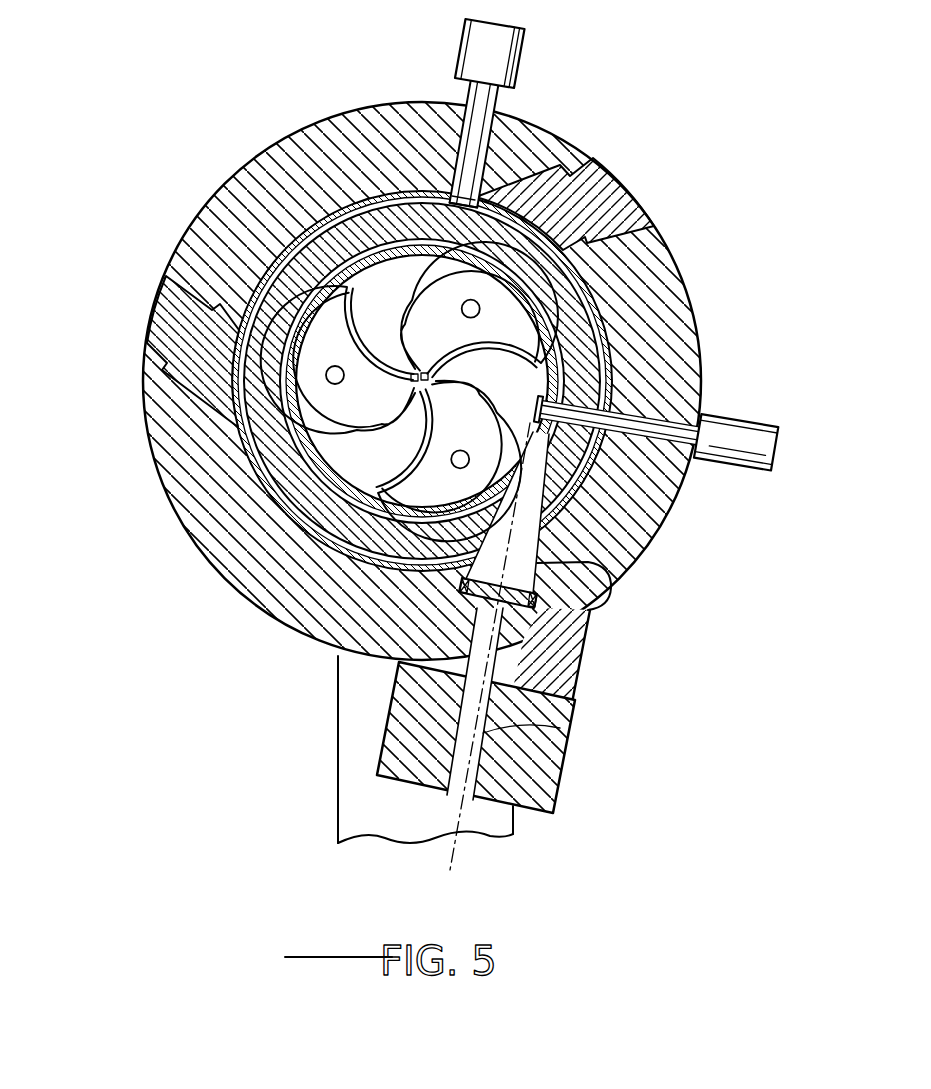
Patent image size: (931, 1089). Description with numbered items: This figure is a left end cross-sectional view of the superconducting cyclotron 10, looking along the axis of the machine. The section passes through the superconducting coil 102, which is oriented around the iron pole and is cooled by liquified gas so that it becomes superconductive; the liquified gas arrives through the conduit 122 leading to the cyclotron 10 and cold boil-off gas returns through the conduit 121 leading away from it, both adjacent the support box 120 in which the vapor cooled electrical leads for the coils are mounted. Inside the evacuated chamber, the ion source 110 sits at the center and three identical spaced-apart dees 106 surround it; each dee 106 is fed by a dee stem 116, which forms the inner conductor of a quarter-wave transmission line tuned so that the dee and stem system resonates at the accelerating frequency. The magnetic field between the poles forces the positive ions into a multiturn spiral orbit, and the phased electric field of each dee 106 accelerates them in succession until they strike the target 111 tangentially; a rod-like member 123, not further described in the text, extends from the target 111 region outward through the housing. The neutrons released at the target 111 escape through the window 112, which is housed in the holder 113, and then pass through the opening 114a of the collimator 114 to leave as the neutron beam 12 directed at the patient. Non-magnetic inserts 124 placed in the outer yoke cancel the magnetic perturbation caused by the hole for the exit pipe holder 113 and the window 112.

The superconducting cyclotron 10 is at (600, 150).
The neutron beam 12 is at (448, 869).
The superconducting coil 102 is at (568, 323).
The dee 106 is at (349, 353).
The ion source 110 is at (363, 122).
The target 111 is at (536, 410).
The window 112 is at (520, 612).
The holder 113 is at (598, 565).
The collimator 114 is at (555, 772).
The opening 114a is at (560, 728).
The dee stem 116 is at (466, 300).
The support box 120 is at (500, 50).
The conduit 121 is at (480, 133).
The conduit 122 is at (483, 182).
The handle rod 123 is at (723, 437).
The non-magnetic insert 124 is at (168, 318).